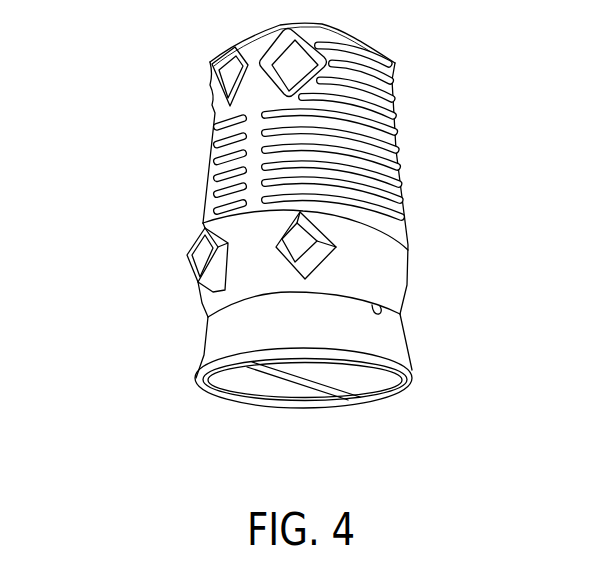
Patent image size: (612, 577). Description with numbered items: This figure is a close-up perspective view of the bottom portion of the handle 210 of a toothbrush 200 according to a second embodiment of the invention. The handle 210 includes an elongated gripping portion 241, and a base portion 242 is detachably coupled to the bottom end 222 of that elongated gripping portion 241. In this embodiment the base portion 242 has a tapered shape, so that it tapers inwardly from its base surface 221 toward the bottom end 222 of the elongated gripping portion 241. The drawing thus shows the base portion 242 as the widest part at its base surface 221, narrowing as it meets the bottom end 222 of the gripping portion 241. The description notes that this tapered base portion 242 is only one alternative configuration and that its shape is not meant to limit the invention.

The toothbrush 200 is at (301, 232).
The handle 210 is at (375, 105).
The elongated gripping portion 241 is at (236, 145).
The bottom end 222 is at (382, 310).
The base portion 242 is at (395, 343).
The base surface 221 is at (340, 385).